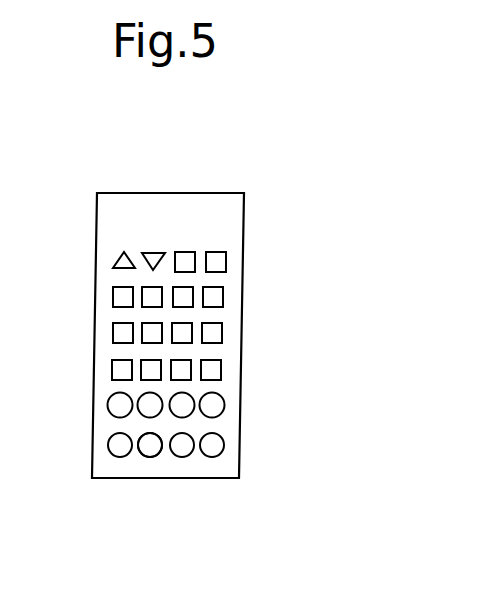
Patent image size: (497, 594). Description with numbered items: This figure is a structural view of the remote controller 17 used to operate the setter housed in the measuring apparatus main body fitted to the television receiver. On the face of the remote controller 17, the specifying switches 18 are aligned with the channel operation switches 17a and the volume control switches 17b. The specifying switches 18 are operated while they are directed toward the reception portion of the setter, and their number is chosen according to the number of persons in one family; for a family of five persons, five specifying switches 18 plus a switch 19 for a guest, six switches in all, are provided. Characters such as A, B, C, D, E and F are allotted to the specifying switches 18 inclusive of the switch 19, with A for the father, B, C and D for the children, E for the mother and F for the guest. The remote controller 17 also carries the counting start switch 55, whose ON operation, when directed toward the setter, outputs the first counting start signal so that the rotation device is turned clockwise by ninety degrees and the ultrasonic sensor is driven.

The remote controller 17 is at (233, 243).
The channel operation switches 17a is at (223, 328).
The volume control switches 17b is at (153, 253).
The specifying switches 18 is at (156, 416).
The switch for a guest 19 is at (150, 457).
The counting start switch 55 is at (222, 449).